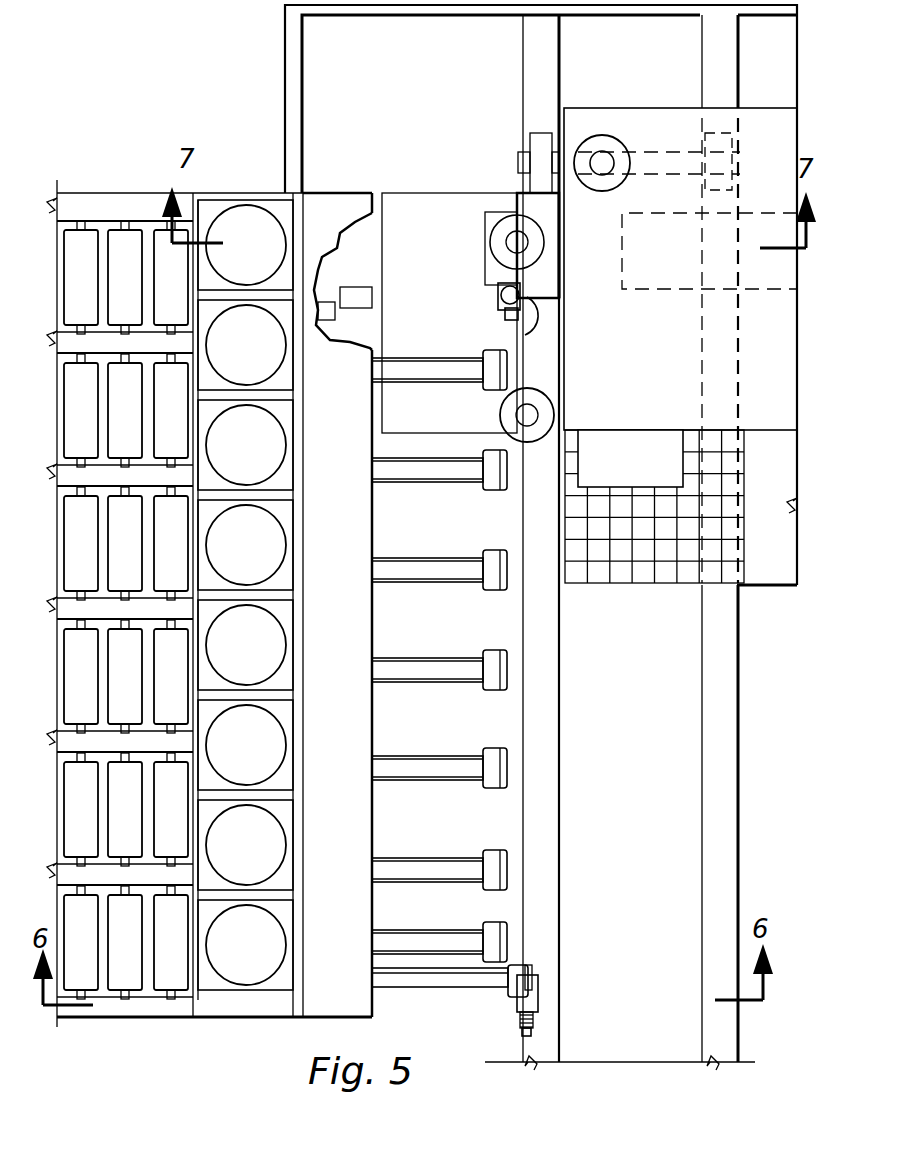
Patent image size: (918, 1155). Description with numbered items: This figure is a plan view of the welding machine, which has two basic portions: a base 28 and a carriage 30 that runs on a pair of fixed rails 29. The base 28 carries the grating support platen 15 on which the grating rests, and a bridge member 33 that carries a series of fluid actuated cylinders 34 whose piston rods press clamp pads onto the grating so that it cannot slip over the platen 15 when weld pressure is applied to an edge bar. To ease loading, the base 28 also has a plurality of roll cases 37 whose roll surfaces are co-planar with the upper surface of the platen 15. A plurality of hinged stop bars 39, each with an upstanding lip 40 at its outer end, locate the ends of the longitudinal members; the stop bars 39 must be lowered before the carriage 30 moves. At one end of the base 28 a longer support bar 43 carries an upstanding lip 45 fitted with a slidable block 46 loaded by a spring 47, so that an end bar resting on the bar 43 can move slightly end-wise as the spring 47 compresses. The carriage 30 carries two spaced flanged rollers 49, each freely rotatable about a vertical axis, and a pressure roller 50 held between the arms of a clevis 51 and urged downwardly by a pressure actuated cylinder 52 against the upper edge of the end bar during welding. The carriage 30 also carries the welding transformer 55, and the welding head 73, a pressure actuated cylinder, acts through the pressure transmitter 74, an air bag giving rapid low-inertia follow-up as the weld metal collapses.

The grating support platen 15 is at (350, 826).
The base 28 is at (193, 1036).
The fixed rails 29 is at (540, 78).
The carriage 30 is at (755, 90).
The bridge member 33 is at (296, 681).
The fluid actuated cylinders 34 is at (285, 380).
The roll cases 37 is at (85, 387).
The stop bars 39 is at (422, 470).
The lip 40 is at (505, 482).
The support bar 43 is at (400, 980).
The upstanding lip 45 is at (530, 966).
The slidable block 46 is at (535, 990).
The spring 47 is at (535, 1030).
The flanged rollers 49 is at (527, 335).
The pressure roller 50 is at (511, 321).
The clevis 51 is at (500, 305).
The pressure actuated cylinder 52 is at (500, 292).
The welding transformer 55 is at (752, 275).
The welding head 73 is at (600, 158).
The pressure transmitter 74 is at (612, 151).